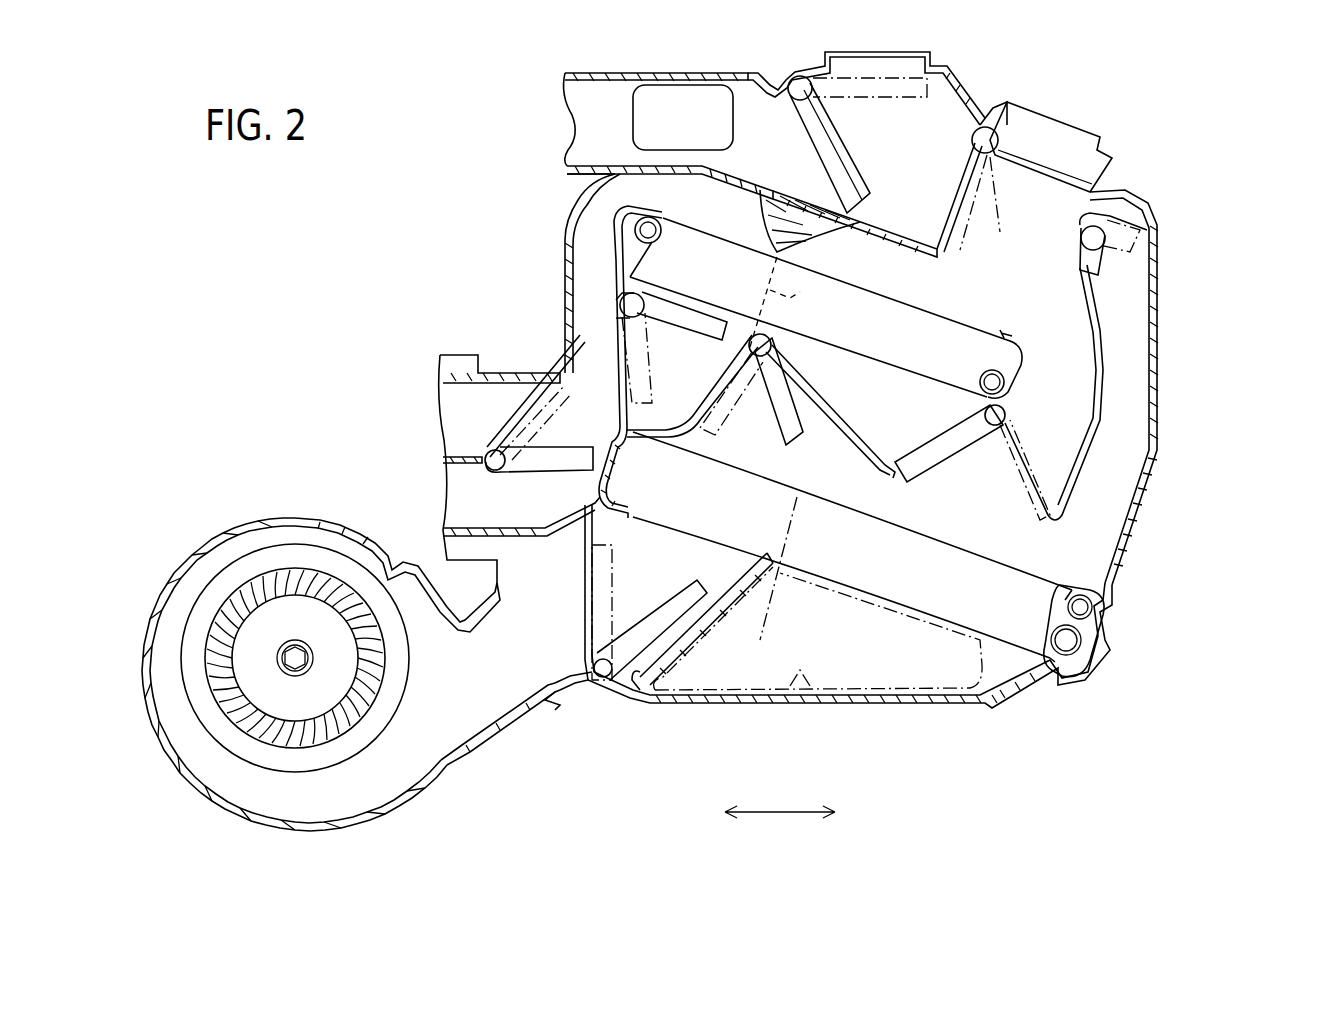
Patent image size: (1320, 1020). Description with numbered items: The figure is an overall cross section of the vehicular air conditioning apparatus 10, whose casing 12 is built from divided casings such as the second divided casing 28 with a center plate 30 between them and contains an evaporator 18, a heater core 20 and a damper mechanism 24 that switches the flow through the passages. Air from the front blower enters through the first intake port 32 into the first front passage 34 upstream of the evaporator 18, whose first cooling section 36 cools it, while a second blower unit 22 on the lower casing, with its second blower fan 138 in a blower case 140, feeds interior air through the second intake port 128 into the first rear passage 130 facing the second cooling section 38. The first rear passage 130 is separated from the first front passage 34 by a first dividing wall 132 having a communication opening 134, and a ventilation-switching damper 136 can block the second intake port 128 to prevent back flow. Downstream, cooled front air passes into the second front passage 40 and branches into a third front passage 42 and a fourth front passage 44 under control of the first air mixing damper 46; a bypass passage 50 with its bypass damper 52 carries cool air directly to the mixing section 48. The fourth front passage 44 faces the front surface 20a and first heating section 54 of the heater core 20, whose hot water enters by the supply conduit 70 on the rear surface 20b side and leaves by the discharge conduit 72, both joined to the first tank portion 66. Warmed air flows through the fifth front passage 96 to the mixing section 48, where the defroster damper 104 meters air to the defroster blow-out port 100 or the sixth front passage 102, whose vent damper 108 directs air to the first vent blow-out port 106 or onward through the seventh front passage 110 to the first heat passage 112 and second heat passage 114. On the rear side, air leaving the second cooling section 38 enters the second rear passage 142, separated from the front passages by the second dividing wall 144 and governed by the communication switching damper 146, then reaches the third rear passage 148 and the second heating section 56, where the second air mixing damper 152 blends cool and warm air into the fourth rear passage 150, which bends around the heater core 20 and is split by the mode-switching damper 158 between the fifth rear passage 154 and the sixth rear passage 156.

The vehicular air conditioning apparatus 10 is at (1165, 76).
The casing 12 is at (826, 424).
The evaporator 18 is at (818, 534).
The heater core 20 is at (847, 285).
The front surface 20a is at (848, 340).
The rear surface 20b is at (838, 275).
The second blower unit 22 is at (351, 658).
The damper mechanism 24 is at (605, 292).
The second divided casing 28 is at (1165, 415).
The center plate 30 is at (1080, 340).
The first intake port 32 is at (820, 710).
The first front passage 34 is at (878, 665).
The first cooling section 36 is at (878, 555).
The second cooling section 38 is at (622, 430).
The second front passage 40 is at (1075, 490).
The third front passage 42 is at (1124, 394).
The fourth front passage 44 is at (880, 360).
The first air mixing damper 46 is at (948, 460).
The mixing section 48 is at (1040, 300).
The bypass passage 50 is at (1135, 380).
The bypass damper 52 is at (1080, 246).
The first heating section 54 is at (960, 340).
The second heating section 56 is at (712, 248).
The first tank portion 66 is at (618, 312).
The supply conduit 70 is at (668, 228).
The discharge conduit 72 is at (1012, 372).
The fifth front passage 96 is at (885, 240).
The defroster blow-out port 100 is at (1055, 126).
The sixth front passage 102 is at (960, 102).
The defroster damper 104 is at (1017, 152).
The first vent blow-out port 106 is at (905, 58).
The vent damper 108 is at (838, 140).
The seventh front passage 110 is at (727, 80).
The first heat passage 112 is at (650, 80).
The second heat passage 114 is at (565, 101).
The second intake port 128 is at (553, 712).
The first rear passage 130 is at (787, 617).
The first dividing wall 132 is at (720, 560).
The communication opening 134 is at (655, 660).
The ventilation-switching damper 136 is at (650, 625).
The second blower fan 138 is at (352, 712).
The blower case 140 is at (232, 535).
The second rear passage 142 is at (710, 580).
The second dividing wall 144 is at (735, 318).
The communication switching damper 146 is at (808, 395).
The third rear passage 148 is at (578, 352).
The fourth rear passage 150 is at (600, 215).
The second air mixing damper 152 is at (692, 338).
The fifth rear passage 154 is at (460, 492).
The sixth rear passage 156 is at (465, 424).
The mode-switching damper 158 is at (542, 465).